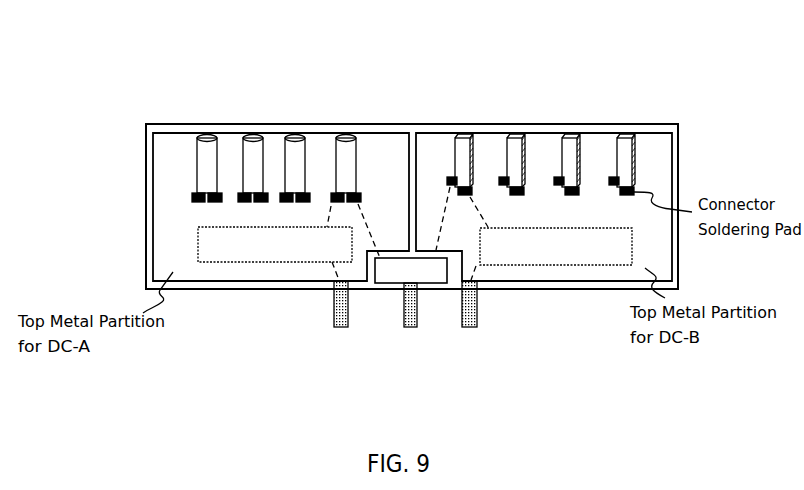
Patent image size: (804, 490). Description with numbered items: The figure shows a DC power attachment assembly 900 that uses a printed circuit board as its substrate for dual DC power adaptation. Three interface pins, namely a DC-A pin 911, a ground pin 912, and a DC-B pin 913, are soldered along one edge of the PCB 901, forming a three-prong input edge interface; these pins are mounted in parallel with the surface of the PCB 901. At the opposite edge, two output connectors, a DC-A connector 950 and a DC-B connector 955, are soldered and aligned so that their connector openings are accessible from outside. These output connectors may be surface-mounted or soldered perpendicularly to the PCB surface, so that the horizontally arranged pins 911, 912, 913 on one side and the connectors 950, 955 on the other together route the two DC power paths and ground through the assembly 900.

The DC power attachment assembly 900 is at (315, 89).
The PCB 901 is at (162, 223).
The DC-A connector 950 is at (203, 136).
The DC-B connector 955 is at (629, 137).
The DC-A pin 911 is at (333, 311).
The ground pin 912 is at (408, 328).
The DC-B pin 913 is at (480, 320).